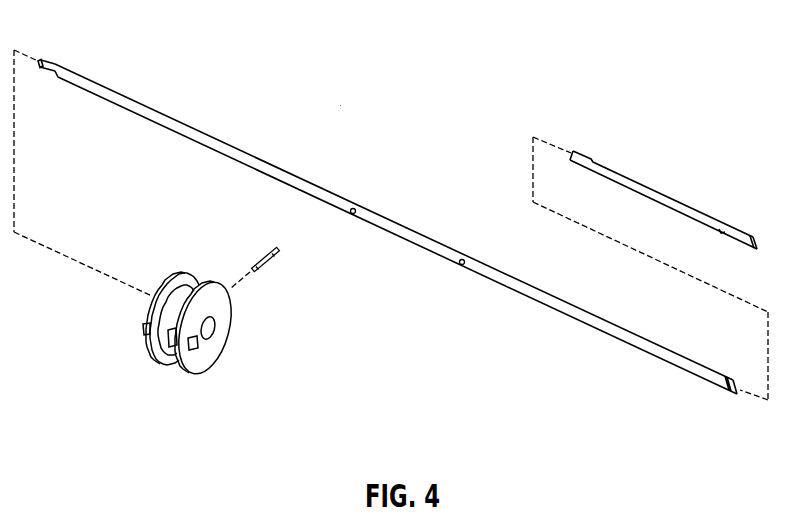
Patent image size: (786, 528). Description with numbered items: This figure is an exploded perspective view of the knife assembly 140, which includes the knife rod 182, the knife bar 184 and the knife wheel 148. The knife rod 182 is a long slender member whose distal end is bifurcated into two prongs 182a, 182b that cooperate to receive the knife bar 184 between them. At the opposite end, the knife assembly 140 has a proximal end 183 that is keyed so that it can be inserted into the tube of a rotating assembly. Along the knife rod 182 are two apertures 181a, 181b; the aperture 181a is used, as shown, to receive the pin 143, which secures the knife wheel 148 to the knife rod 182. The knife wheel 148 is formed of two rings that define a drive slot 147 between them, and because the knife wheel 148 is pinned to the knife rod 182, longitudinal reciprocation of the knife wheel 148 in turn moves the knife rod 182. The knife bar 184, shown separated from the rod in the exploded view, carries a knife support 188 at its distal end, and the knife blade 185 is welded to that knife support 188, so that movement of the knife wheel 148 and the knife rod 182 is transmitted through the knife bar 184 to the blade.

The knife assembly 140 is at (339, 110).
The pin 143 is at (273, 258).
The drive slot 147 is at (210, 270).
The knife wheel 148 is at (222, 340).
The aperture 181a is at (341, 211).
The aperture 181b is at (450, 262).
The knife rod 182 is at (590, 328).
The prong 182a is at (713, 390).
The prong 182b is at (723, 378).
The proximal end 183 is at (50, 62).
The knife bar 184 is at (652, 188).
The knife blade 185 is at (756, 233).
The knife support 188 is at (722, 236).